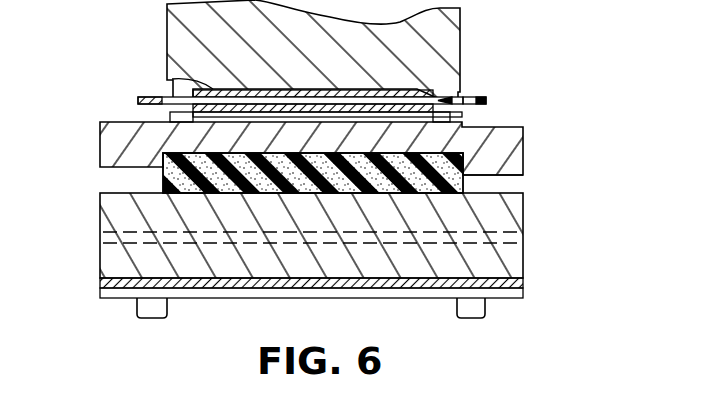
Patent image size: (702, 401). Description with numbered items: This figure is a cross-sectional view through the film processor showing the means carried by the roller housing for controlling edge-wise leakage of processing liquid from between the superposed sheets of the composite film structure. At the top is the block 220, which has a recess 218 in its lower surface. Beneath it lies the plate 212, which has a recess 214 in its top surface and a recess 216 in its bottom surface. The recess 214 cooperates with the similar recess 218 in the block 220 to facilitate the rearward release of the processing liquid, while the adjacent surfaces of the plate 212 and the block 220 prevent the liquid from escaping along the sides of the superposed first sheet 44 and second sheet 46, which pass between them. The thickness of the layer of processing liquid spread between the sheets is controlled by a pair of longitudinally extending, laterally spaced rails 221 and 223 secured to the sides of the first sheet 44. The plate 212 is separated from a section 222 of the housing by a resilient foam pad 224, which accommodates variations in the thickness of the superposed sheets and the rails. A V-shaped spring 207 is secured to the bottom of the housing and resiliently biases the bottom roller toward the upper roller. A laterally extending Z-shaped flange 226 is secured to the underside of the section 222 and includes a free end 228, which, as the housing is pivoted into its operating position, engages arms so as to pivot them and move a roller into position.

The block 220 is at (460, 32).
The recess 218 is at (434, 89).
The recess 214 is at (444, 99).
The rail 223 is at (483, 103).
The recess 216 is at (452, 152).
The plate 212 is at (507, 158).
The section 222 is at (517, 213).
The first sheet 44 is at (170, 79).
The rail 221 is at (168, 114).
The second sheet 46 is at (217, 127).
The resilient foam pad 224 is at (162, 178).
The free end 228 is at (226, 232).
The V-shaped spring 207 is at (380, 284).
The Z-shaped flange 226 is at (510, 294).